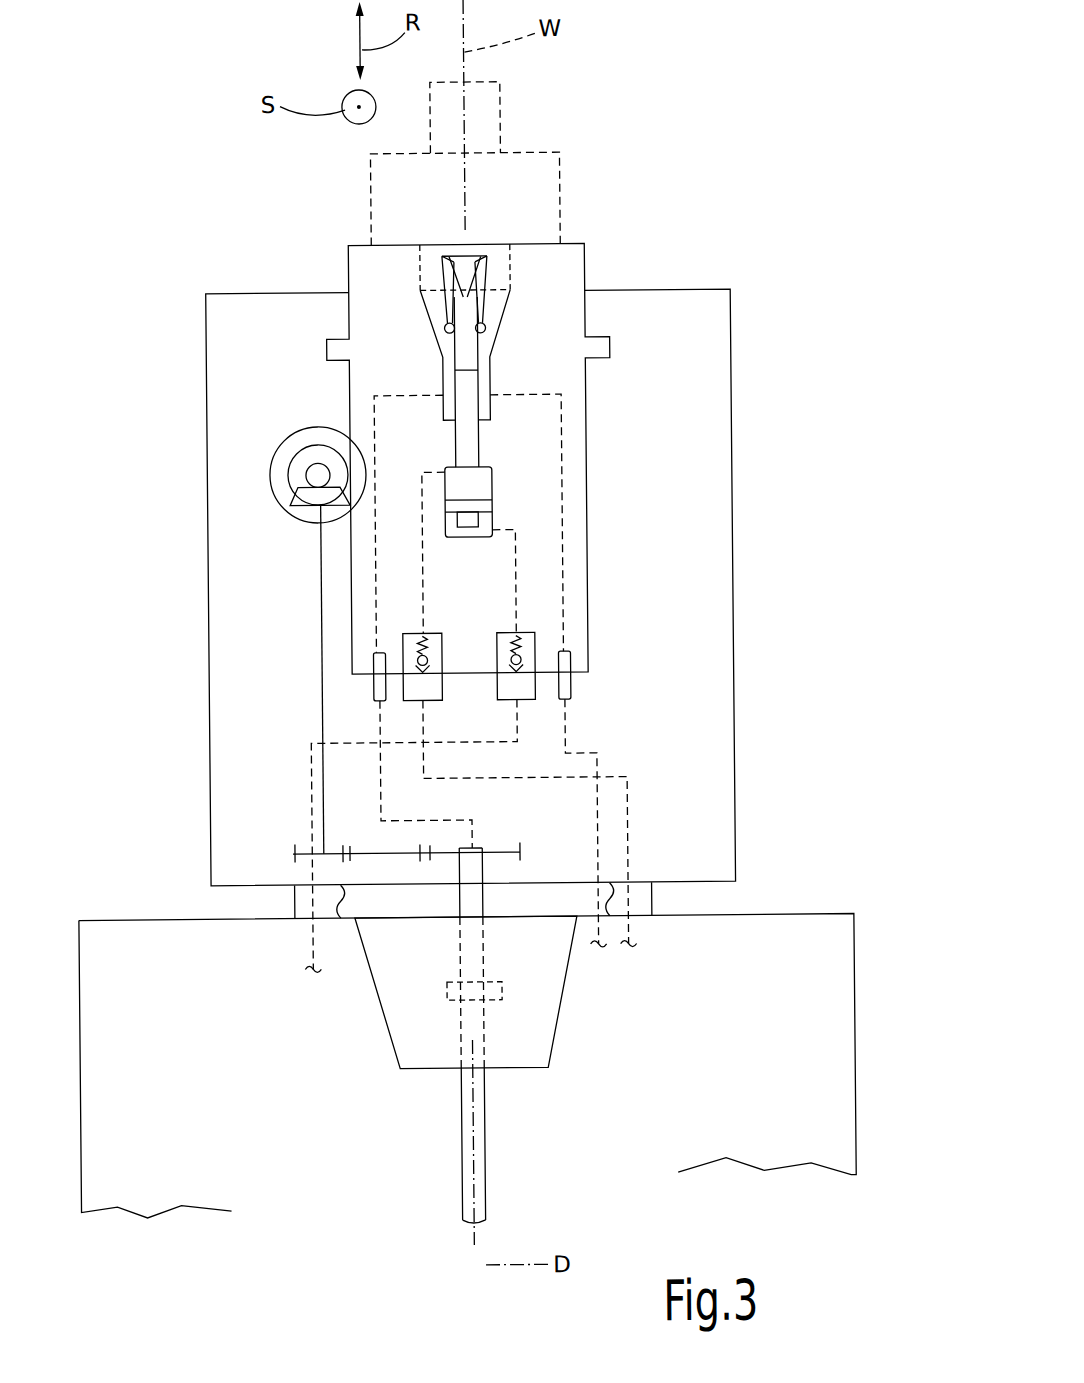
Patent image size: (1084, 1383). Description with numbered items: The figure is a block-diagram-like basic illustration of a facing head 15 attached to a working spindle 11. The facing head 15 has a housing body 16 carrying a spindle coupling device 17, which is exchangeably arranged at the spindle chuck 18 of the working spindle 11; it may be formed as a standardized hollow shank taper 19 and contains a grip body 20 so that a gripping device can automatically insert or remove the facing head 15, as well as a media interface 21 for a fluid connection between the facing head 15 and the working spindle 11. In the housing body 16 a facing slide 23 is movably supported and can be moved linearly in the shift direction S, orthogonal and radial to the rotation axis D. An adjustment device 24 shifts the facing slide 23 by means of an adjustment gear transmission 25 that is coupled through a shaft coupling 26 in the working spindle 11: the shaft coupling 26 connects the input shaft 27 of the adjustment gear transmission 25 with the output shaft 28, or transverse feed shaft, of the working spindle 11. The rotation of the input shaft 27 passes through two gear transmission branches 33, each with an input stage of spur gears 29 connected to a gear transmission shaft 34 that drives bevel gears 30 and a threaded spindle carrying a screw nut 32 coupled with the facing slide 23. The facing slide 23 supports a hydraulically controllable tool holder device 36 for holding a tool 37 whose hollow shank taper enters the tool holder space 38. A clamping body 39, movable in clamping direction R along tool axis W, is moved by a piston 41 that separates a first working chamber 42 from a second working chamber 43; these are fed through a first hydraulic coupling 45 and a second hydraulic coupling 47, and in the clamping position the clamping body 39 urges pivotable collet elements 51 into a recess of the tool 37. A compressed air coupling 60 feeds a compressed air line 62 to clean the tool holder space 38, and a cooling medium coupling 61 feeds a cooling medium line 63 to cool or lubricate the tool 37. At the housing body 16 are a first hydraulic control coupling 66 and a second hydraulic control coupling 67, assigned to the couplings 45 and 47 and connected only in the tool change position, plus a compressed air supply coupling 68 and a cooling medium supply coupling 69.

The working spindle 11 is at (840, 1033).
The facing head 15 is at (796, 238).
The housing body 16 is at (734, 337).
The spindle coupling device 17 is at (727, 900).
The spindle chuck 18 is at (573, 1061).
The hollow shank taper 19 is at (406, 1040).
The grip body 20 is at (392, 903).
The media interface 21 is at (636, 863).
The facing slide 23 is at (580, 262).
The adjustment device 24 is at (236, 588).
The adjustment gear transmission 25 is at (298, 570).
The shaft coupling 26 is at (500, 1000).
The input shaft 27 is at (456, 897).
The output shaft 28 is at (480, 1178).
The spur gears 29 is at (296, 846).
The bevel gears 30 is at (318, 446).
The screw nut 32 is at (284, 436).
The gear transmission branches 33 is at (269, 676).
The gear transmission shaft 34 is at (323, 696).
The tool holder device 36 is at (526, 216).
The tool 37 is at (509, 123).
The tool holder space 38 is at (426, 288).
The clamping body 39 is at (465, 293).
The piston 41 is at (491, 508).
The first working chamber 42 is at (449, 530).
The second working chamber 43 is at (449, 468).
The first hydraulic coupling 45 is at (487, 647).
The second hydraulic coupling 47 is at (443, 647).
The collet elements 51 is at (428, 290).
The compressed air coupling 60 is at (570, 661).
The cooling medium coupling 61 is at (374, 658).
The compressed air line 62 is at (519, 395).
The cooling medium line 63 is at (420, 394).
The first hydraulic control coupling 66 is at (492, 683).
The second hydraulic control coupling 67 is at (439, 680).
The compressed air supply coupling 68 is at (569, 694).
The cooling medium supply coupling 69 is at (372, 685).